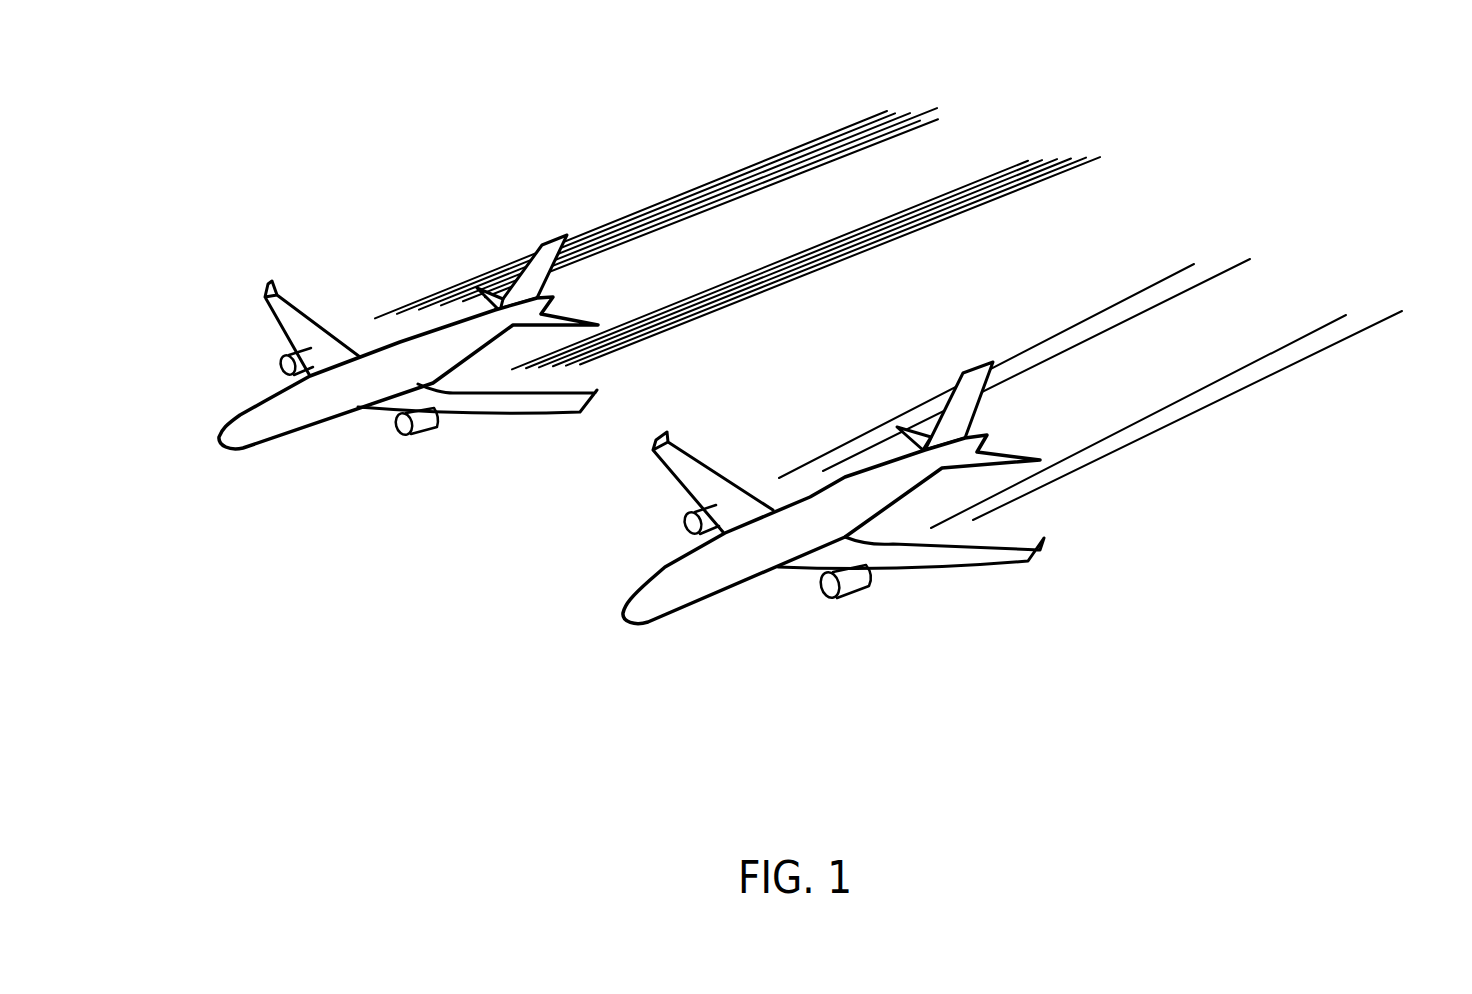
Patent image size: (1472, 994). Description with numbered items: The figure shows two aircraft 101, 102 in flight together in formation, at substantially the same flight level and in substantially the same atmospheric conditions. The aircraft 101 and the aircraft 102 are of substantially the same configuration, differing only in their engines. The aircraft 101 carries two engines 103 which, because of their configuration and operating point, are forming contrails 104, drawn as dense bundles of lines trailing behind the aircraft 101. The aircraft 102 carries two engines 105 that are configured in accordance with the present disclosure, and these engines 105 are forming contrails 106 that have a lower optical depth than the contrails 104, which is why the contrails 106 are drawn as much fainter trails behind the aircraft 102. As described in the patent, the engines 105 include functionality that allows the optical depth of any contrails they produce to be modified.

The aircraft 101 is at (340, 361).
The aircraft 102 is at (770, 505).
The engines 103 is at (330, 398).
The contrails 104 is at (949, 88).
The engines 105 is at (686, 514).
The contrails 106 is at (1240, 244).